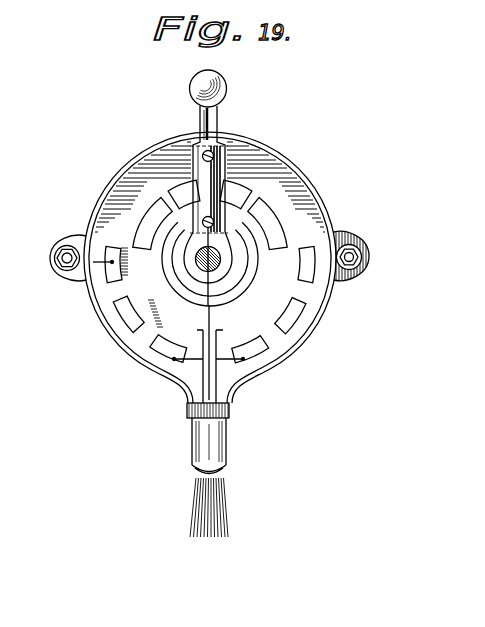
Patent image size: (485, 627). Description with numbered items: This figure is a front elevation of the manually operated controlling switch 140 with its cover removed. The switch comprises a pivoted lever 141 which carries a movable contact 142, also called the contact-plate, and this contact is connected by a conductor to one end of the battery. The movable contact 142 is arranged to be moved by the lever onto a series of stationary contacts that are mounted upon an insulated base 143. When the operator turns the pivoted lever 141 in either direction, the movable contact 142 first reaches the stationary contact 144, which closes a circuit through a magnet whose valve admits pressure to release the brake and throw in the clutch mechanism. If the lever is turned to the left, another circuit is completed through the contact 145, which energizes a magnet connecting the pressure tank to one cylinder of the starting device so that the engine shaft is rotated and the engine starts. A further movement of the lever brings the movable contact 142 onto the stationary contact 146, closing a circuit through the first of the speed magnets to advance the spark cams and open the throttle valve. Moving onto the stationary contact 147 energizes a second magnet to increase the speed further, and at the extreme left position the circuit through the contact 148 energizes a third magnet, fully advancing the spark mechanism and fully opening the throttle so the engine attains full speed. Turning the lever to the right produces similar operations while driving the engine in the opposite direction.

The controlling switch 140 is at (300, 127).
The pivoted lever 141 is at (200, 117).
The movable contact 142 is at (226, 185).
The insulated base 143 is at (124, 196).
The stationary contact 144 is at (172, 245).
The contact 145 is at (158, 207).
The stationary contact 146 is at (311, 248).
The stationary contact 147 is at (125, 318).
The contact 148 is at (158, 353).